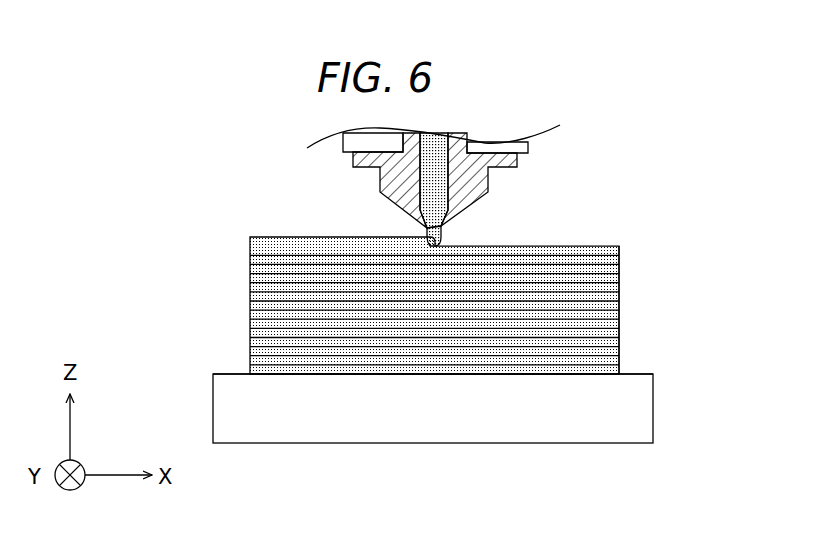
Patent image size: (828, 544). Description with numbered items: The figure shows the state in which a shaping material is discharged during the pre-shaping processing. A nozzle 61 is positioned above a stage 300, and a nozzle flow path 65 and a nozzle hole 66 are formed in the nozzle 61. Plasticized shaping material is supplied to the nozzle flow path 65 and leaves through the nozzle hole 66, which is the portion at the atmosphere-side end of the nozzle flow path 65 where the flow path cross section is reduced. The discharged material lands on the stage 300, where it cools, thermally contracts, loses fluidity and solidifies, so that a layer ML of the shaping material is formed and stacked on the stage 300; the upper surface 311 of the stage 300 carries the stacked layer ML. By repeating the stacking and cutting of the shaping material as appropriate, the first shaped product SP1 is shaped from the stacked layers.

The nozzle 61 is at (432, 185).
The nozzle flow path 65 is at (452, 200).
The nozzle hole 66 is at (425, 229).
The first shaped product SP1 is at (634, 249).
The layer ML is at (250, 303).
The stage upper surface 311 is at (622, 374).
The stage 300 is at (635, 390).